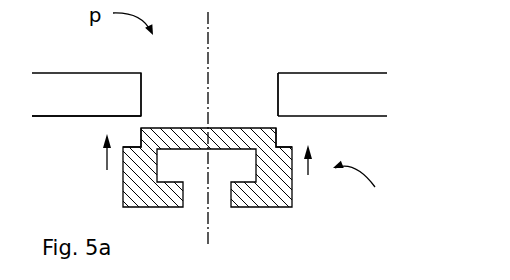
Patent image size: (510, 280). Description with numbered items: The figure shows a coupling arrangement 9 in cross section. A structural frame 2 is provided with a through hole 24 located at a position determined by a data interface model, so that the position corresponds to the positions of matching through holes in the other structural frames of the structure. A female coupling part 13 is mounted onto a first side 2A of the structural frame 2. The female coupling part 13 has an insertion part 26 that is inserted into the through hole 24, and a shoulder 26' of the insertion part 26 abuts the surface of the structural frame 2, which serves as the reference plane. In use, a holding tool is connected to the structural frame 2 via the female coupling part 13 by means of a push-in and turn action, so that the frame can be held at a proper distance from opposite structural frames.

The structural frame 2 is at (318, 76).
The first side of the structural frame 2A is at (59, 117).
The through hole 24 is at (278, 97).
The female coupling part 13 is at (292, 206).
The insertion part 26 is at (303, 133).
The shoulder 26' is at (121, 114).
The coupling arrangement 9 is at (359, 190).